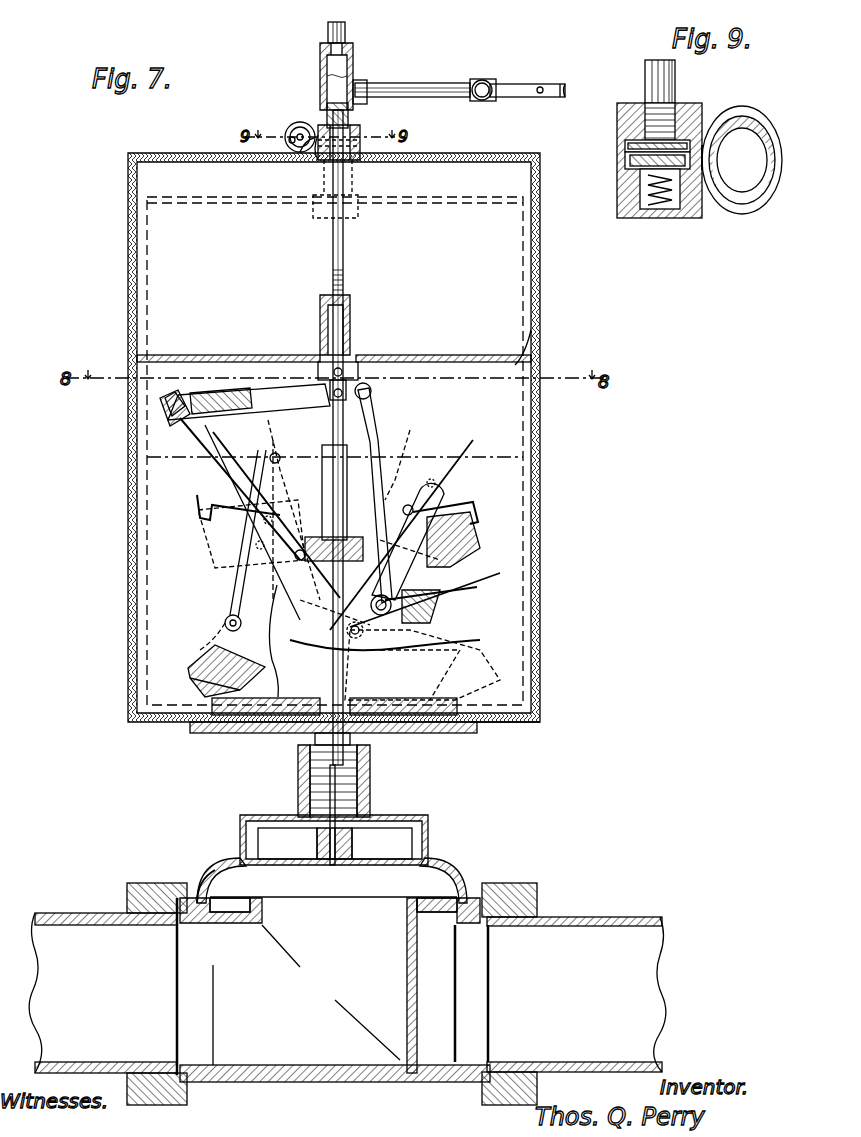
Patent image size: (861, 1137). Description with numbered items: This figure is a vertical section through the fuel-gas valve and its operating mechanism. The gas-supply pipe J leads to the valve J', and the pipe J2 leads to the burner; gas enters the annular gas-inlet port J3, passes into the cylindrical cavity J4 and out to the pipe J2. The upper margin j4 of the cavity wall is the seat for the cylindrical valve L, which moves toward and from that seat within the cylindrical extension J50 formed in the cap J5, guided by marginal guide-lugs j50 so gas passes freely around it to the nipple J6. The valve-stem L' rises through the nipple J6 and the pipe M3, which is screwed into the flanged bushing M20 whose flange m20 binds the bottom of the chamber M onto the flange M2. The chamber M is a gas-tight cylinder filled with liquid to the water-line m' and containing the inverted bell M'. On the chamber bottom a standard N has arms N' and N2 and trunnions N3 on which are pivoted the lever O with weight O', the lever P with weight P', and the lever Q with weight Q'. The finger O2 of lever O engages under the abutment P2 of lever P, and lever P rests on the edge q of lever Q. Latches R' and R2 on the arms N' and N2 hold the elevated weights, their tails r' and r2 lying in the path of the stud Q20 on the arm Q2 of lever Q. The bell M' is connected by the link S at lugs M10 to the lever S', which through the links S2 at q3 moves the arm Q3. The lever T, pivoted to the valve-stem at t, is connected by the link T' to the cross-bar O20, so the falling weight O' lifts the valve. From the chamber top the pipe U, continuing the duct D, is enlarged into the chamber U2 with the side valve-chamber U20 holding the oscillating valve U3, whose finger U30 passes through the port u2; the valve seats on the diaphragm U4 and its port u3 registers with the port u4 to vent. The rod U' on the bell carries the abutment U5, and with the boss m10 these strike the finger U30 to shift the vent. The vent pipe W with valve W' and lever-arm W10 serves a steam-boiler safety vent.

In FIG. 7, the chamber M is at (361, 437).
In FIG. 7, the water-line m' is at (372, 451).
In FIG. 7, the lugs M10 is at (355, 372).
In FIG. 7, the bell-receiver M' is at (555, 332).
In FIG. 7, the rod U' is at (365, 437).
In FIG. 7, the duct D is at (346, 33).
In FIG. 7, the pipe U is at (358, 76).
In FIG. 7, the valve stem or finger U30 is at (348, 138).
In FIG. 7, the chamber U2 is at (362, 150).
In FIG. 9, the chamber U2 is at (752, 140).
In FIG. 7, the oscillating valve U3 is at (301, 127).
In FIG. 9, the oscillating valve U3 is at (630, 158).
In FIG. 7, the port u4 is at (288, 125).
In FIG. 7, the port u3 is at (292, 143).
In FIG. 9, the port u3 is at (628, 182).
In FIG. 7, the port u2 is at (322, 152).
In FIG. 9, the port u2 is at (705, 168).
In FIG. 7, the valve-chamber U20 is at (303, 124).
In FIG. 9, the valve-chamber U20 is at (640, 165).
In FIG. 7, the vent pipe W is at (434, 50).
In FIG. 7, the abutment U5 is at (410, 95).
In FIG. 7, the valve W' is at (506, 61).
In FIG. 7, the lever-arm W10 is at (540, 84).
In FIG. 7, the turret or boss m10 is at (350, 300).
In FIG. 7, the link S is at (350, 346).
In FIG. 7, the pivot t is at (360, 372).
In FIG. 7, the lever T is at (245, 359).
In FIG. 7, the lever S' is at (136, 421).
In FIG. 7, the link T' is at (384, 493).
In FIG. 7, the arm N' is at (205, 519).
In FIG. 7, the arm N2 is at (440, 480).
In FIG. 7, the tail r2 is at (410, 459).
In FIG. 7, the tail r' is at (294, 510).
In FIG. 7, the links S2 is at (278, 456).
In FIG. 7, the latch R' is at (181, 511).
In FIG. 7, the latch R2 is at (462, 503).
In FIG. 7, the stud Q20 is at (251, 534).
In FIG. 7, the arm Q2 is at (305, 580).
In FIG. 7, the arm Q3 is at (228, 615).
In FIG. 7, the connection point q3 is at (225, 625).
In FIG. 7, the weight P' is at (508, 534).
In FIG. 7, the lever P is at (428, 587).
In FIG. 7, the abutment P2 is at (400, 580).
In FIG. 7, the lever Q is at (480, 585).
In FIG. 7, the weight Q' is at (446, 606).
In FIG. 7, the edge q is at (395, 608).
In FIG. 7, the lever O is at (214, 657).
In FIG. 7, the weight O' is at (161, 687).
In FIG. 7, the finger O2 is at (470, 648).
In FIG. 7, the cross-bar O20 is at (470, 644).
In FIG. 7, the trunnions N3 is at (319, 641).
In FIG. 7, the standard N is at (314, 737).
In FIG. 7, the pipe M3 is at (282, 732).
In FIG. 7, the flange M2 is at (465, 728).
In FIG. 7, the flange m20 is at (318, 740).
In FIG. 7, the flanged collar or bushing M20 is at (372, 752).
In FIG. 7, the nipple or pipe J6 is at (360, 790).
In FIG. 7, the valve L is at (357, 834).
In FIG. 7, the cylindrical extension J50 is at (412, 850).
In FIG. 7, the valve-stem L' is at (312, 815).
In FIG. 7, the annular gas-inlet port J3 is at (455, 892).
In FIG. 7, the cap J5 is at (212, 878).
In FIG. 7, the marginal guide-lugs j50 is at (333, 891).
In FIG. 7, the valve-seat j4 is at (333, 884).
In FIG. 7, the cylindrical cavity J4 is at (328, 986).
In FIG. 7, the valve J' is at (335, 1093).
In FIG. 7, the pipe J2 is at (70, 932).
In FIG. 7, the gas-supply pipe J is at (560, 990).
In FIG. 9, the diaphragm U4 is at (680, 148).